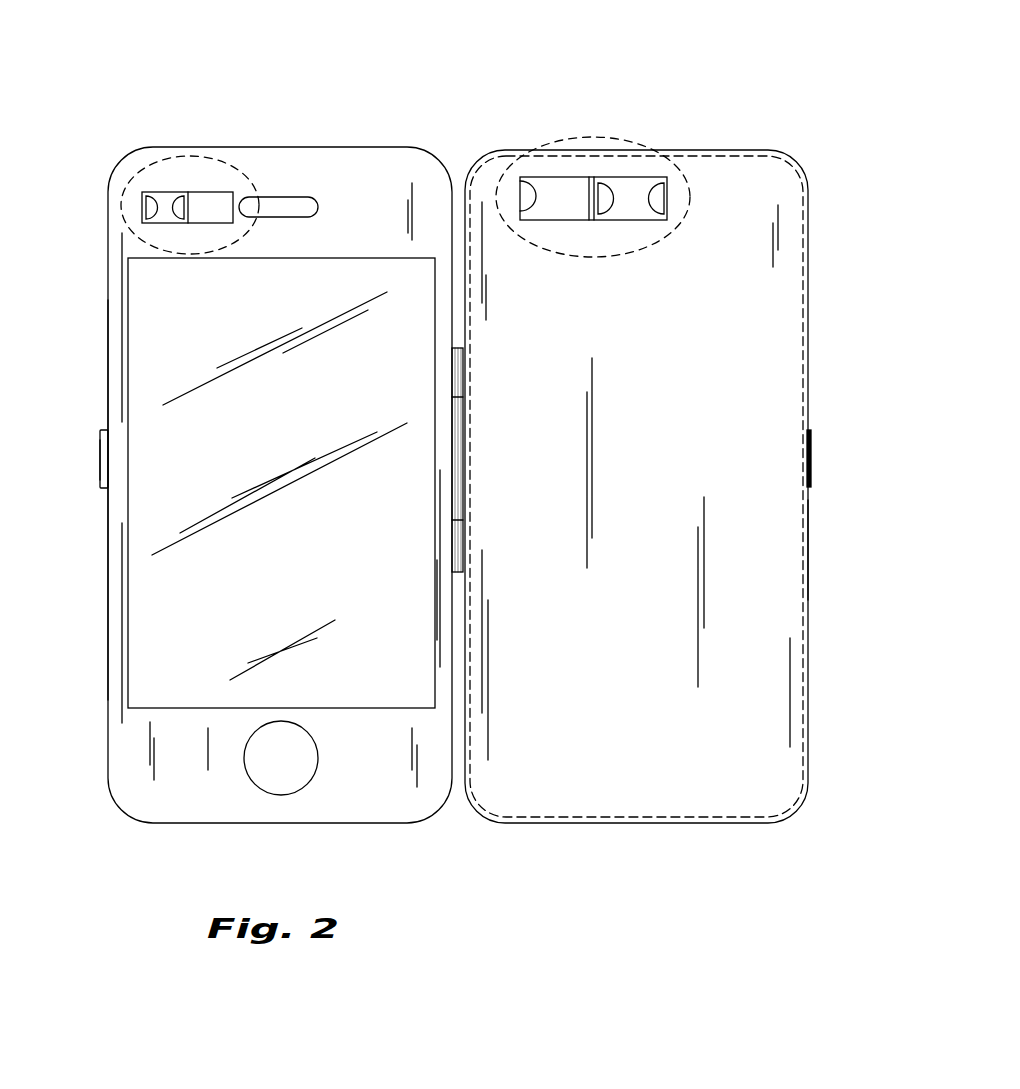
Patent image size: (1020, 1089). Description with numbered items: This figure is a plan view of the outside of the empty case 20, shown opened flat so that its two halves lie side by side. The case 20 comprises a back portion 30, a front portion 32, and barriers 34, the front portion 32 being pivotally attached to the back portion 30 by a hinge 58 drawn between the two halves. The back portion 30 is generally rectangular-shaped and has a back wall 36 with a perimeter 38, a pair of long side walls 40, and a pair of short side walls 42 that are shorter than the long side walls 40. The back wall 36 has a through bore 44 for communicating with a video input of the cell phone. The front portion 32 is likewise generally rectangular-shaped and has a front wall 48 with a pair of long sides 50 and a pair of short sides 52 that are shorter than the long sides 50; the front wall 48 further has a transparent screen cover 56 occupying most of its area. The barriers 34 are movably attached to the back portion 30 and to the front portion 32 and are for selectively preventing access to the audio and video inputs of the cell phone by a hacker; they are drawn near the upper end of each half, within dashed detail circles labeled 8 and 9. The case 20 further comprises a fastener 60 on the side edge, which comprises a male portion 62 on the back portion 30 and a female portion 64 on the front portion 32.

The case 20 is at (97, 90).
The front portion 32 is at (178, 145).
The short sides 52 is at (400, 148).
The front wall 48 is at (358, 218).
The long sides 50 is at (108, 297).
The transparent screen cover 56 is at (197, 355).
The fastener 60 is at (97, 447).
The female portion 64 is at (100, 458).
The barriers 34 is at (210, 203).
The detail view reference 9 is at (240, 168).
The detail view reference 8 is at (560, 135).
The hinge 58 is at (460, 380).
The back portion 30 is at (710, 145).
The short side walls 42 is at (772, 148).
The long side walls 40 is at (815, 355).
The back wall 36 is at (740, 583).
The perimeter 38 is at (808, 540).
The male portion 62 is at (810, 458).
The through bore 44 is at (540, 200).